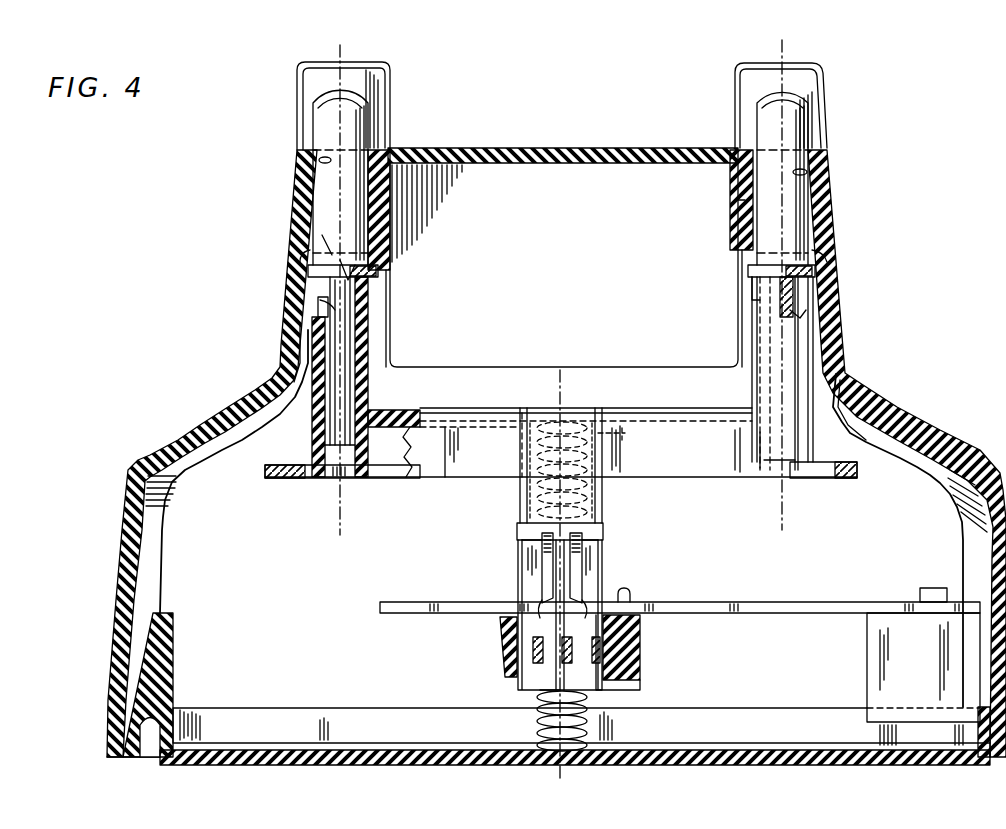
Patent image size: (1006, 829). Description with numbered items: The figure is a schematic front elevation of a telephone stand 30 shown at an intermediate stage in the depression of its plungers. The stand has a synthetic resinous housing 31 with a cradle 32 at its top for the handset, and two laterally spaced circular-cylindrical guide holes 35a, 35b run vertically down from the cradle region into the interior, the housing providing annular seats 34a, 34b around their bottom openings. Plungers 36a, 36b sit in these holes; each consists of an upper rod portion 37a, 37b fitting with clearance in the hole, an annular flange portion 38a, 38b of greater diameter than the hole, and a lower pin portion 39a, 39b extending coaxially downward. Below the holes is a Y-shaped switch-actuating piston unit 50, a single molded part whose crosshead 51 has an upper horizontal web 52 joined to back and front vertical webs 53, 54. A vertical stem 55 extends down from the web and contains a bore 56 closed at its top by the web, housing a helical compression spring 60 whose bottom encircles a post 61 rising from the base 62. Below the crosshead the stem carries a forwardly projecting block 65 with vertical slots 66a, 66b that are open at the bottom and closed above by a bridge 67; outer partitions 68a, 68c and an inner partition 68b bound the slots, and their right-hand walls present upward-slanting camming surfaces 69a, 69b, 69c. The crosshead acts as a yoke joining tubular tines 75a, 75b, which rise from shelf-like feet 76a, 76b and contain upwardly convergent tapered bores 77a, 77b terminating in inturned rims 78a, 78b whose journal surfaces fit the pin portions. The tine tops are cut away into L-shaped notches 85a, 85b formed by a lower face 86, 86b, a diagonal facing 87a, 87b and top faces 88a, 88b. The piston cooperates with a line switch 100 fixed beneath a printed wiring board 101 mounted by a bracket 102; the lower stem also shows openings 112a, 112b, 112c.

The telephone stand 30 is at (602, 133).
The housing 31 is at (498, 148).
The cradle 32 is at (390, 95).
The seat 34a is at (835, 258).
The seat 34b is at (308, 262).
The guide hole 35a is at (806, 174).
The guide hole 35b is at (318, 158).
The plunger 36a is at (826, 135).
The plunger 36b is at (298, 118).
The rod portion 37a is at (790, 120).
The rod portion 37b is at (345, 105).
The flange portion 38a is at (828, 272).
The flange portion 38b is at (310, 275).
The pin portion 39a is at (835, 290).
The pin portion 39b is at (326, 305).
The switch-actuating piston unit 50 is at (593, 405).
The crosshead 51 is at (648, 410).
The upper horizontal web 52 is at (453, 412).
The back vertical web 53 is at (409, 477).
The front vertical web 54 is at (445, 478).
The stem 55 is at (518, 486).
The bore 56 is at (588, 460).
The helical compression spring 60 is at (605, 435).
The post 61 is at (588, 730).
The base 62 is at (700, 748).
The block 65 is at (603, 556).
The vertical slot 66a is at (580, 576).
The vertical slot 66b is at (545, 547).
The bridge 67 is at (590, 527).
The outer partition 68a is at (632, 594).
The inner partition 68b is at (583, 546).
The outer partition 68c is at (522, 560).
The camming surface 69a is at (568, 607).
The camming surface 69b is at (575, 604).
The camming surface 69c is at (540, 596).
The tubular tine 75a is at (757, 402).
The tubular tine 75b is at (370, 395).
The foot 76a is at (840, 478).
The foot 76b is at (283, 478).
The conically tapered bore 77a is at (782, 480).
The conically tapered bore 77b is at (326, 485).
The inturned arcuate rim 78a is at (752, 268).
The inturned arcuate rim 78b is at (388, 272).
The L-shaped notch 85a is at (830, 312).
The L-shaped notch 85b is at (305, 318).
The lower face 86 is at (840, 332).
The lower face 86b is at (280, 380).
The diagonal facing 87a is at (780, 297).
The diagonal facing 87b is at (318, 330).
The top face 88a is at (717, 211).
The top face 88b is at (297, 191).
The line switch 100 is at (492, 669).
The printed wiring board 101 is at (794, 603).
The bracket 102 is at (928, 686).
The hole 112a is at (600, 672).
The hole 112b is at (540, 690).
The hole 112c is at (533, 640).